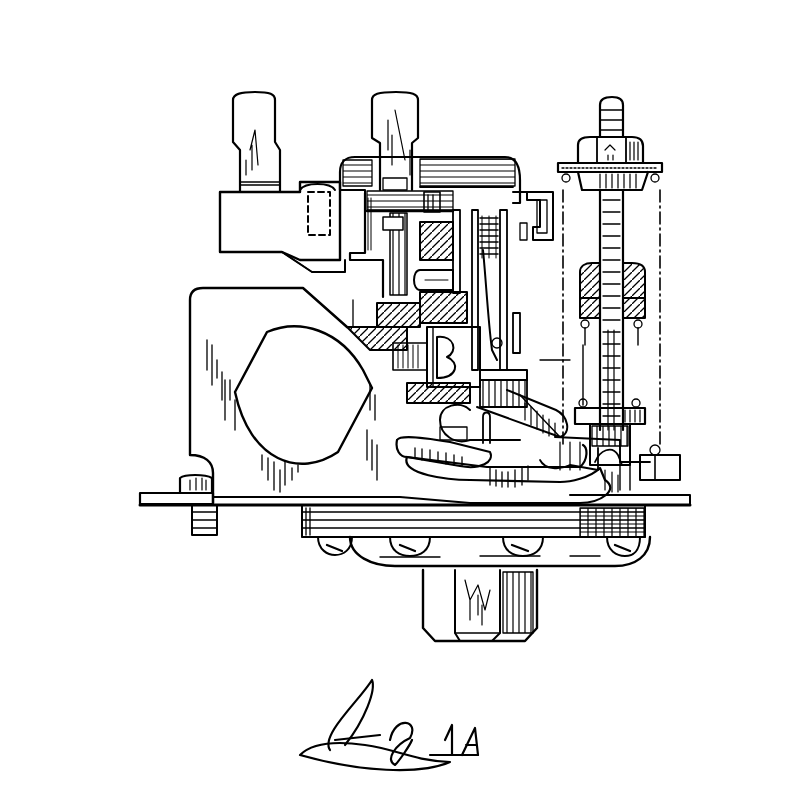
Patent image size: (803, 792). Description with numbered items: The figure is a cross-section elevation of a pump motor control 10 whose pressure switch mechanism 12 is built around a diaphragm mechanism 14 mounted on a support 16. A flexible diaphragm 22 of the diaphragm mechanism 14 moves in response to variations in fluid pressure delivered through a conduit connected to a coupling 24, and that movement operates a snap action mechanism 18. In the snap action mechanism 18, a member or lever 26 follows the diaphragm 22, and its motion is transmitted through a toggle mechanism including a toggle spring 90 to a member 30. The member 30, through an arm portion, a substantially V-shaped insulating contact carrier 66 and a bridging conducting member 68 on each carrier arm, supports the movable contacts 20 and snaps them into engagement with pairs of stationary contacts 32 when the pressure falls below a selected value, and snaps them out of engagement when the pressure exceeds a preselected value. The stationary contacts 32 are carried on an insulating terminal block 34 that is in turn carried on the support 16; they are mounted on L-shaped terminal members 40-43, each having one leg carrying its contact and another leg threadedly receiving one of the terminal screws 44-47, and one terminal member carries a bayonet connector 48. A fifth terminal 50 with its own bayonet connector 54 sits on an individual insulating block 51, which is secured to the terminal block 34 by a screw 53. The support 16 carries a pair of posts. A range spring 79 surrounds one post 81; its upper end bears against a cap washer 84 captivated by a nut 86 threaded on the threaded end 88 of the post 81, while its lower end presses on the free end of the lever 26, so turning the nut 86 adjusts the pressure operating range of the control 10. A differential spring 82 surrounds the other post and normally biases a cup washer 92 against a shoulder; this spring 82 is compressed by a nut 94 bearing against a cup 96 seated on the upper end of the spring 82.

The control 10 is at (170, 269).
The pressure switch mechanism 12 is at (540, 362).
The diaphragm mechanism 14 is at (370, 560).
The support 16 is at (168, 508).
The snap action mechanism 18 is at (548, 410).
The movable contacts 20 is at (468, 222).
The flexible diaphragm 22 is at (302, 512).
The coupling 24 is at (440, 588).
The member 26 is at (645, 482).
The member 30 is at (500, 363).
The stationary contacts 32 is at (466, 212).
The insulating terminal block 34 is at (395, 257).
The L-shaped terminal members 40-43 is at (436, 195).
The terminal screws 44-47 is at (318, 190).
The bayonet connector 48 is at (400, 100).
The terminal 50 is at (250, 180).
The insulating block 51 is at (228, 220).
The screw 53 is at (345, 312).
The bayonet connector 54 is at (248, 108).
The insulating contact carrier 66 is at (620, 263).
The conducting member 68 is at (610, 262).
The range spring 79 is at (660, 178).
The post 81 is at (620, 237).
The differential spring 82 is at (642, 326).
The cap washer 84 is at (655, 168).
The nut 86 is at (638, 138).
The threaded end 88 is at (616, 98).
The toggle spring 90 is at (545, 440).
The cup washer 92 is at (648, 420).
The nut 94 is at (640, 284).
The cup 96 is at (640, 318).